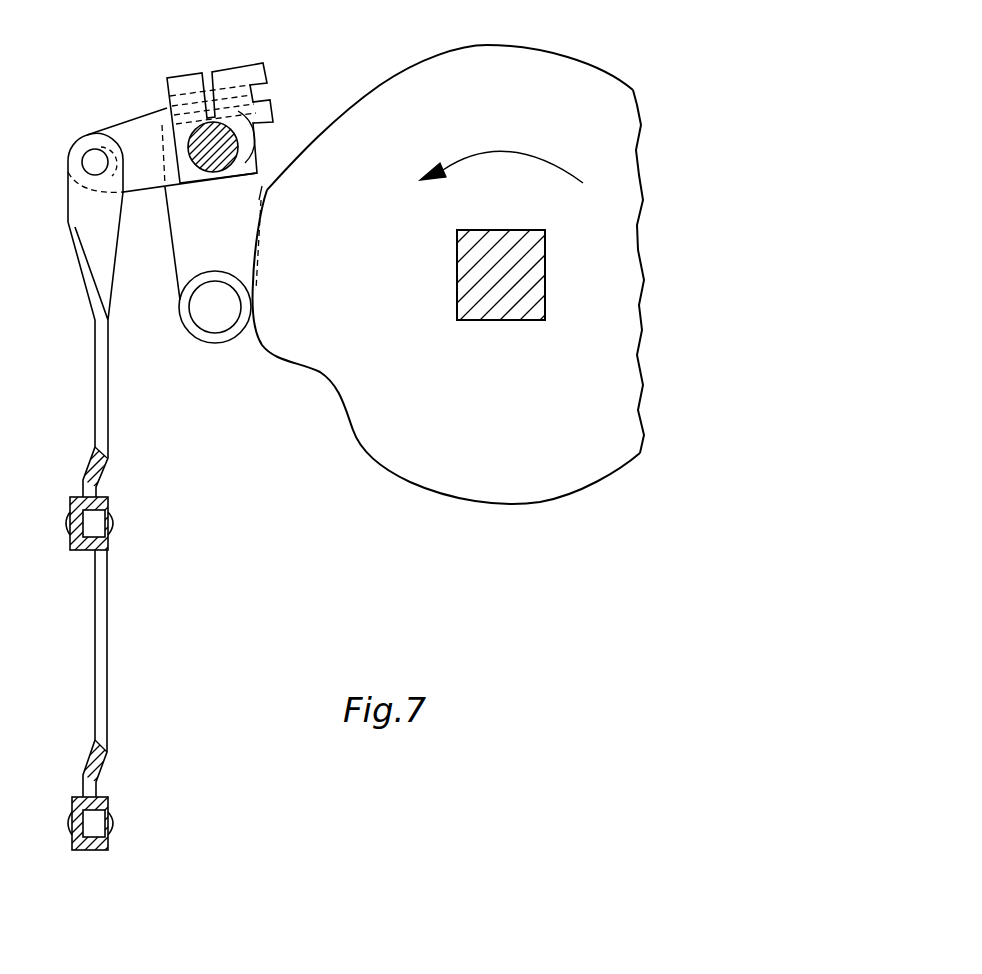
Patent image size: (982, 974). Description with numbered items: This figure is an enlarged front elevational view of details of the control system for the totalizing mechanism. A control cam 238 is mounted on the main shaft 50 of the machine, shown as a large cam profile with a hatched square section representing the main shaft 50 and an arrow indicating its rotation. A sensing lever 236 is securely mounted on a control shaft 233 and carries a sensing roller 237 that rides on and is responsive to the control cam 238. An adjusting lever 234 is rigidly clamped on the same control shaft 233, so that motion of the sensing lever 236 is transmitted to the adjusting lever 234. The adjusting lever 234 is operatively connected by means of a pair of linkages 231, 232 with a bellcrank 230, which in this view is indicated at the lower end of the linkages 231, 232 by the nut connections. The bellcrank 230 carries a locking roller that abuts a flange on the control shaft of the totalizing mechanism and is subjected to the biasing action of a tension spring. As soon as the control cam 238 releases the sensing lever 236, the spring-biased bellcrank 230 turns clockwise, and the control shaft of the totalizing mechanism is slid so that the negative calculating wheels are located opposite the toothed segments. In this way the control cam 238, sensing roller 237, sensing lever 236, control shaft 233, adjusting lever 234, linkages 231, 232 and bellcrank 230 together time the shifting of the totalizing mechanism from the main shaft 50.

The main shaft 50 is at (513, 318).
The bellcrank 230 is at (82, 850).
The linkage 231 is at (103, 633).
The linkage 232 is at (95, 385).
The control shaft 233 is at (262, 190).
The adjusting lever 234 is at (125, 137).
The sensing lever 236 is at (182, 228).
The sensing roller 237 is at (215, 320).
The control cam 238 is at (502, 490).